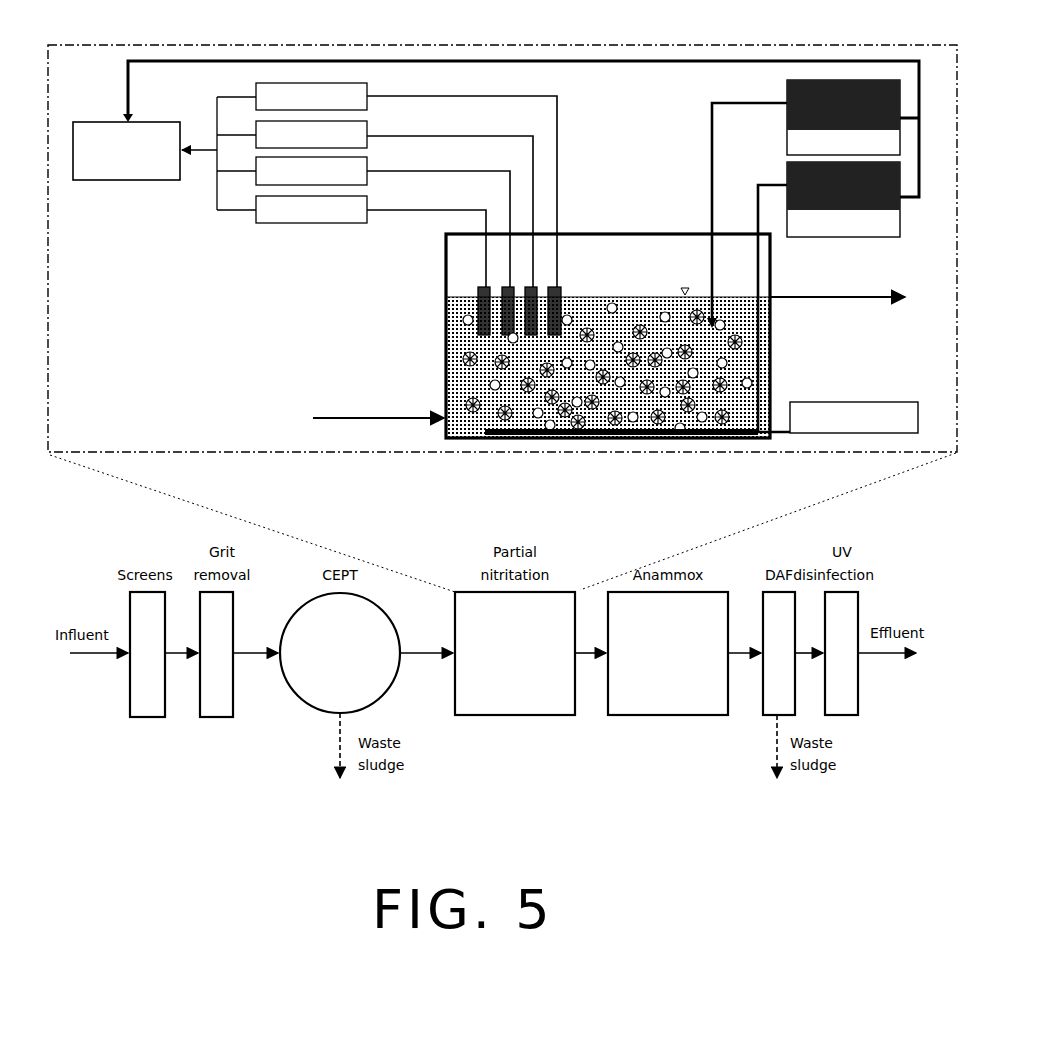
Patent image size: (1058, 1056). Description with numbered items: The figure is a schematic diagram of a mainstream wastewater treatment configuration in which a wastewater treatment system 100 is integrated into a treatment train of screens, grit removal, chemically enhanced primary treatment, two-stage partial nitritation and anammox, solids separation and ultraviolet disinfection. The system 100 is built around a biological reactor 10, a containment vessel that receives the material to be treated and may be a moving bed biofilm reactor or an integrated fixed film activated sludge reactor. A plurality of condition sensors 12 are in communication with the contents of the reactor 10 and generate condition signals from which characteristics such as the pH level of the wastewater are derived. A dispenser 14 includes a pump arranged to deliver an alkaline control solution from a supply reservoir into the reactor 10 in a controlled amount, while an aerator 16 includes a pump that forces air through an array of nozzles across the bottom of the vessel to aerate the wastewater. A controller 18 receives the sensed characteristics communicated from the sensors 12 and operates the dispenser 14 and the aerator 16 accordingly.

The wastewater treatment system 100 is at (535, 45).
The biological reactor 10 is at (587, 232).
The condition sensors 12 is at (276, 252).
The dispenser 14 is at (826, 80).
The aerator 16 is at (870, 237).
The controller 18 is at (108, 182).